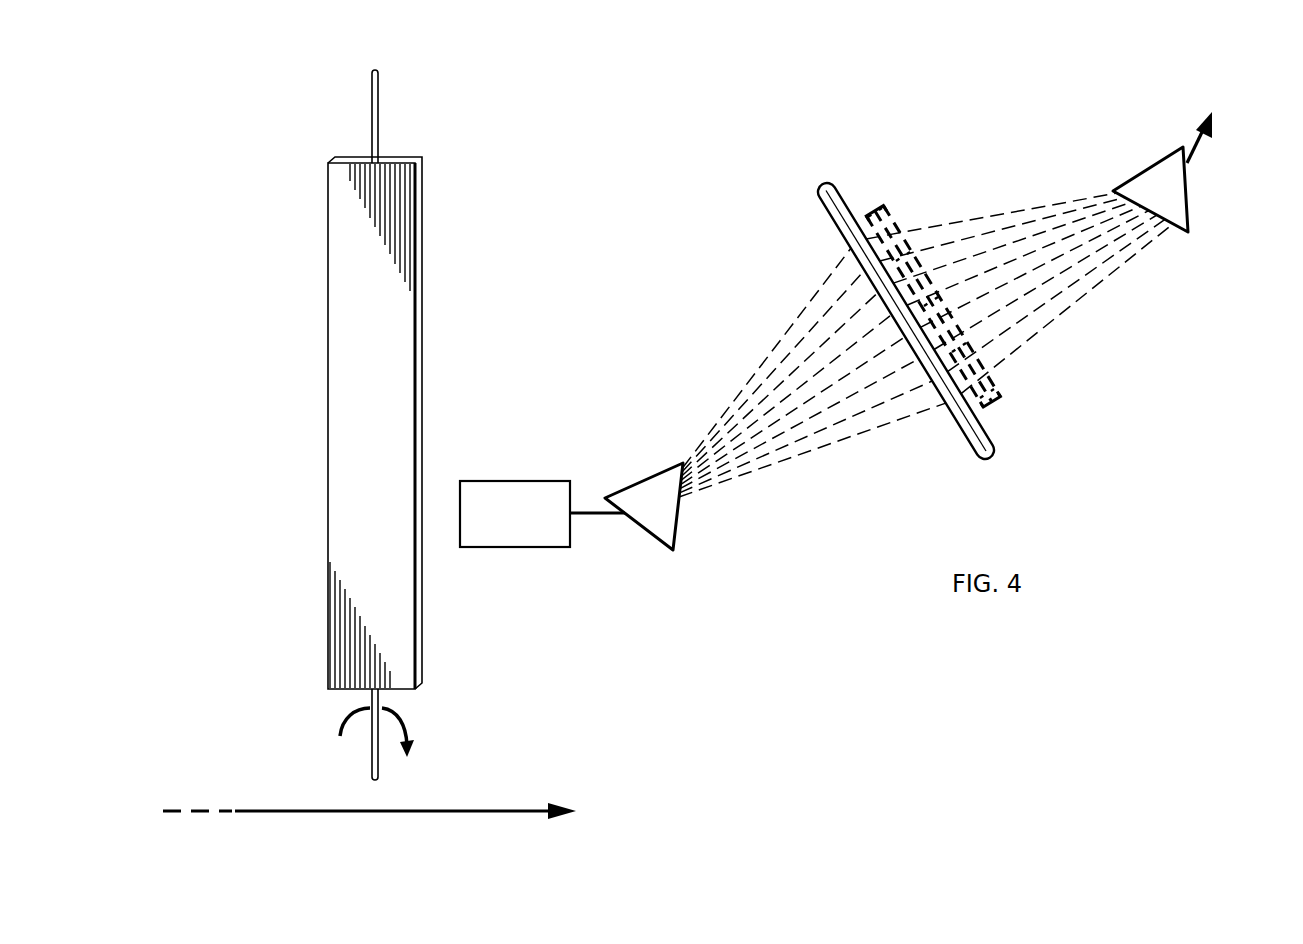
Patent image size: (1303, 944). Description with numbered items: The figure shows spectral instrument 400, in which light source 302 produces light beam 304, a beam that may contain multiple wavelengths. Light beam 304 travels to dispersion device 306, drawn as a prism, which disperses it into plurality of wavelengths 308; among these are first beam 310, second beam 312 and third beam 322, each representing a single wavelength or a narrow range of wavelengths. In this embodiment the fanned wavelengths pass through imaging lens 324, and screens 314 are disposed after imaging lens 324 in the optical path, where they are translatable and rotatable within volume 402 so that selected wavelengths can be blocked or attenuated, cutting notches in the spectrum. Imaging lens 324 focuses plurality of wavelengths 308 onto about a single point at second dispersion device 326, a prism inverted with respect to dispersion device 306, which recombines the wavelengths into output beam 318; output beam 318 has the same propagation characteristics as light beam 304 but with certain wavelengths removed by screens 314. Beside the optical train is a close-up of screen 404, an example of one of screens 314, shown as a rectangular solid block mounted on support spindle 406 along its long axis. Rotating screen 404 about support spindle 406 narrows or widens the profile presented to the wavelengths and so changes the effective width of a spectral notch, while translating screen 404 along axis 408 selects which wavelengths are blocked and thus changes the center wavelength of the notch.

The light source 302 is at (495, 528).
The light beam 304 is at (598, 516).
The dispersion device 306 is at (645, 480).
The plurality of wavelengths 308 is at (921, 373).
The first beam 310 is at (807, 453).
The second beam 312 is at (722, 428).
The screens 314 is at (900, 222).
The output beam 318 is at (1199, 152).
The third beam 322 is at (770, 380).
The imaging lens 324 is at (833, 220).
The second dispersion device 326 is at (1148, 170).
The spectral instrument 400 is at (1011, 102).
The volume 402 is at (997, 408).
The screen 404 is at (328, 424).
The support spindle 406 is at (370, 115).
The axis 408 is at (407, 813).